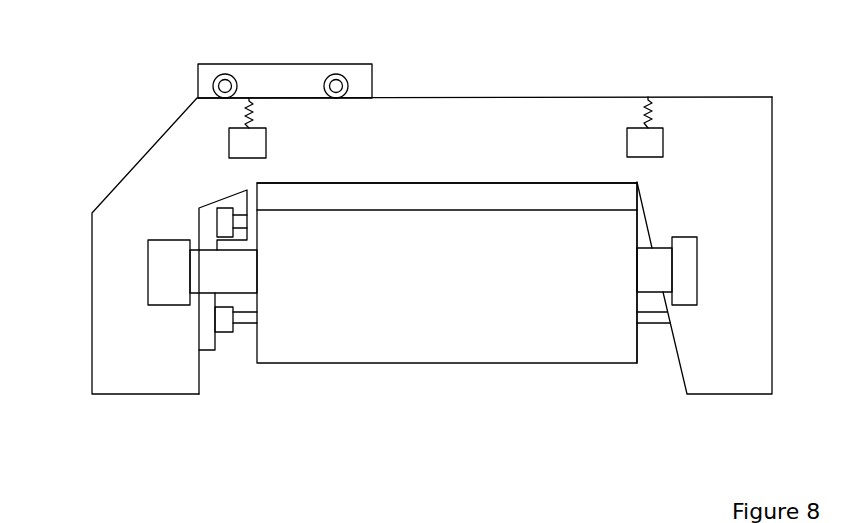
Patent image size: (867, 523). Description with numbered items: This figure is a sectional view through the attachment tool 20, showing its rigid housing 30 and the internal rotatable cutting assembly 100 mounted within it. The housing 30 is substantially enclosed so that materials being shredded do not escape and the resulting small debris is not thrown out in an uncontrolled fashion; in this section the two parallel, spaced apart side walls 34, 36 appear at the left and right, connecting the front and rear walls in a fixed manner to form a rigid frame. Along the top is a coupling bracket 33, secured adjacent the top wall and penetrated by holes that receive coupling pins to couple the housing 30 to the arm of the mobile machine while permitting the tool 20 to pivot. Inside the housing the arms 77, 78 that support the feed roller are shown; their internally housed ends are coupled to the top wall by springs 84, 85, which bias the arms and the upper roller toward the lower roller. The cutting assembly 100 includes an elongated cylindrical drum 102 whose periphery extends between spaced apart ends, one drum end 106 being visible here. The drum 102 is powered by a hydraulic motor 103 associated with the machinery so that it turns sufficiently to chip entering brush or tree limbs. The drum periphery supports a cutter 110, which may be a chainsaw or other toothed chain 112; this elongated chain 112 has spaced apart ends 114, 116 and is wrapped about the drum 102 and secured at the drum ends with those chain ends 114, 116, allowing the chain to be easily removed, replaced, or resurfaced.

The attachment tool 20 is at (89, 123).
The housing 30 is at (148, 101).
The coupling bracket 33 is at (362, 70).
The side wall 34 is at (92, 293).
The side wall 36 is at (772, 243).
The arm 77 is at (650, 220).
The arm 78 is at (248, 203).
The spring 84 is at (250, 98).
The spring 85 is at (648, 97).
The cutting assembly 100 is at (401, 380).
The drum 102 is at (492, 363).
The hydraulic motor 103 is at (171, 290).
The drum end 106 is at (637, 337).
The cutter 110 is at (449, 203).
The toothed chain 112 is at (563, 220).
The chain end 114 is at (255, 337).
The chain end 116 is at (640, 332).